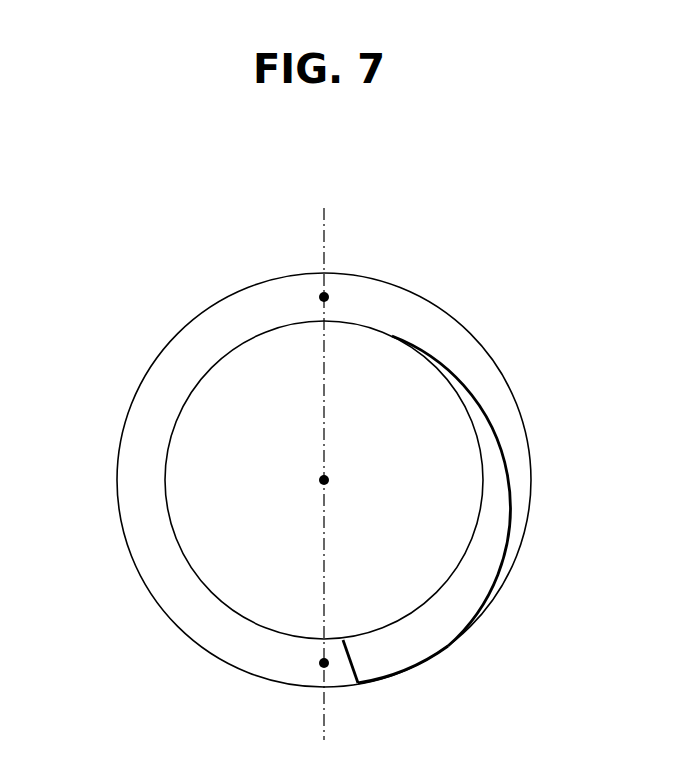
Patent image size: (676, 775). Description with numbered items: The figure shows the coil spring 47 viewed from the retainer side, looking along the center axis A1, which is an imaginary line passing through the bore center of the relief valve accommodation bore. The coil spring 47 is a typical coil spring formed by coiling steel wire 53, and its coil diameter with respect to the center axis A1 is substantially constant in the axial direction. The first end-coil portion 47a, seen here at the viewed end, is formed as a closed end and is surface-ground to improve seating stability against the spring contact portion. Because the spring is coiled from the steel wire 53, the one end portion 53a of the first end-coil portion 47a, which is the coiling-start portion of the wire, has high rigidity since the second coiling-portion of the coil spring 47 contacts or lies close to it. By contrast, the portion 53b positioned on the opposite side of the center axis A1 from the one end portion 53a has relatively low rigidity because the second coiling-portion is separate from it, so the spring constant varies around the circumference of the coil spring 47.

The coil spring 47 is at (319, 476).
The first end-coil portion 47a is at (177, 595).
The steel wire 53 is at (138, 518).
The one end portion 53a is at (324, 663).
The portion 53b is at (324, 297).
The center axis A1 is at (324, 480).